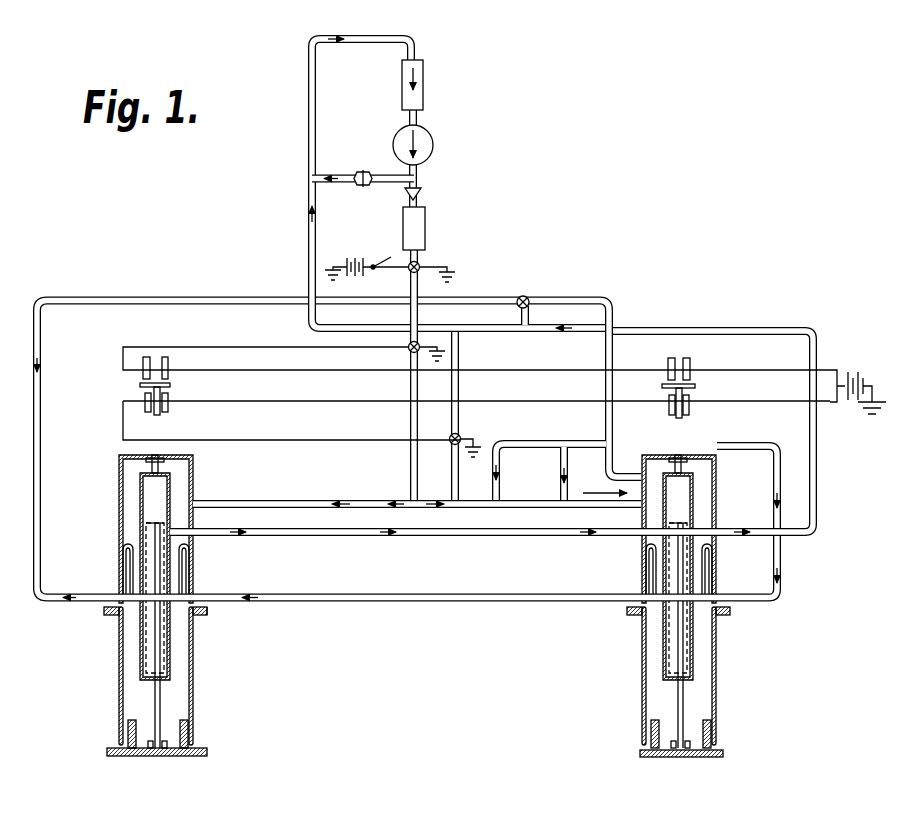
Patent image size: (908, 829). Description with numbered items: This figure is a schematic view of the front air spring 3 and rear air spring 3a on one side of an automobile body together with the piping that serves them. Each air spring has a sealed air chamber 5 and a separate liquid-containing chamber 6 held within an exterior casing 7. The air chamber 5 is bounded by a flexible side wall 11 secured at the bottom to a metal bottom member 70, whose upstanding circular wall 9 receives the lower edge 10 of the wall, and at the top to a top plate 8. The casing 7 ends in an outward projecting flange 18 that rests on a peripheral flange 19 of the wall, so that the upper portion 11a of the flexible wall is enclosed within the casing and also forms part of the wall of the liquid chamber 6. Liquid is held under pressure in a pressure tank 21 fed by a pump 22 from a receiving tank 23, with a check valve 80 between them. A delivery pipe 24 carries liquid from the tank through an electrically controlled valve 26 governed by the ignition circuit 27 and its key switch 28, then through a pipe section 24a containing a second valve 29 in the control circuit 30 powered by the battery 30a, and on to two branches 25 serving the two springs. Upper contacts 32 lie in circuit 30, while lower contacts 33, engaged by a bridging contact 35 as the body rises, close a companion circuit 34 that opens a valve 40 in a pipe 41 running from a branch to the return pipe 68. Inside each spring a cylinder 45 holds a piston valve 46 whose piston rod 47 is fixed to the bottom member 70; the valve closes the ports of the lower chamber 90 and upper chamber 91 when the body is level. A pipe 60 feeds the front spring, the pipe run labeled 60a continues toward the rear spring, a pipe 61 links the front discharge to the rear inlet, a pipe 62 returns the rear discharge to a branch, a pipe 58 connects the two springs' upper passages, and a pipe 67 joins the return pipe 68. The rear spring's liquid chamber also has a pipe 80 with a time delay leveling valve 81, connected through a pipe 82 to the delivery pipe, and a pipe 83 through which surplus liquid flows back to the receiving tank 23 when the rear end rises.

The front air spring 3 is at (117, 510).
The rear air spring 3a is at (637, 558).
The sealed air chamber 5 is at (413, 689).
The liquid-containing chamber 6 is at (417, 489).
The exterior casing 7 is at (119, 539).
The top plate 8 is at (119, 612).
The upstanding circular wall 9 is at (136, 736).
The lower edge 10 is at (189, 735).
The flexible side wall 11 is at (119, 681).
The upper portion of flexible wall 11a is at (188, 573).
The outward projecting flange 18 is at (207, 610).
The peripheral flange 19 is at (204, 618).
The pressure tank 21 is at (415, 222).
The pump 22 is at (426, 136).
The receiving tank 23 is at (423, 82).
The delivery pipe 24 is at (410, 286).
The pipe section 24a is at (410, 420).
The branch pipes 25 is at (298, 498).
The electrically controlled valve 26 is at (419, 264).
The ignition circuit 27 is at (458, 268).
The ignition switch 28 is at (392, 258).
The electrically controlled valve 29 is at (408, 349).
The electrical control circuit 30 is at (270, 338).
The battery 30a is at (857, 370).
The upper contacts 32 is at (150, 357).
The lower contacts 33 is at (164, 412).
The companion circuit 34 is at (272, 442).
The bridging contact 35 is at (173, 384).
The electrically operated valve 40 is at (460, 435).
The pipe 41 is at (461, 384).
The cylinder 45 is at (173, 513).
The piston valve 46 is at (150, 566).
The piston rod 47 is at (160, 712).
The pipe 58 is at (319, 537).
The pipe 60 is at (242, 297).
The conduit 60a is at (601, 297).
The pipe 61 is at (418, 603).
The pipe 62 is at (745, 603).
The pipe 67 is at (703, 327).
The return pipe 68 is at (306, 222).
The bottom member 70 is at (115, 750).
The pipe 80 is at (419, 190).
The time delay leveling valve 81 is at (530, 296).
The pipe 82 is at (495, 296).
The pipe 83 is at (519, 318).
The lower cylinder chamber 90 is at (140, 650).
The upper cylinder chamber 91 is at (160, 490).